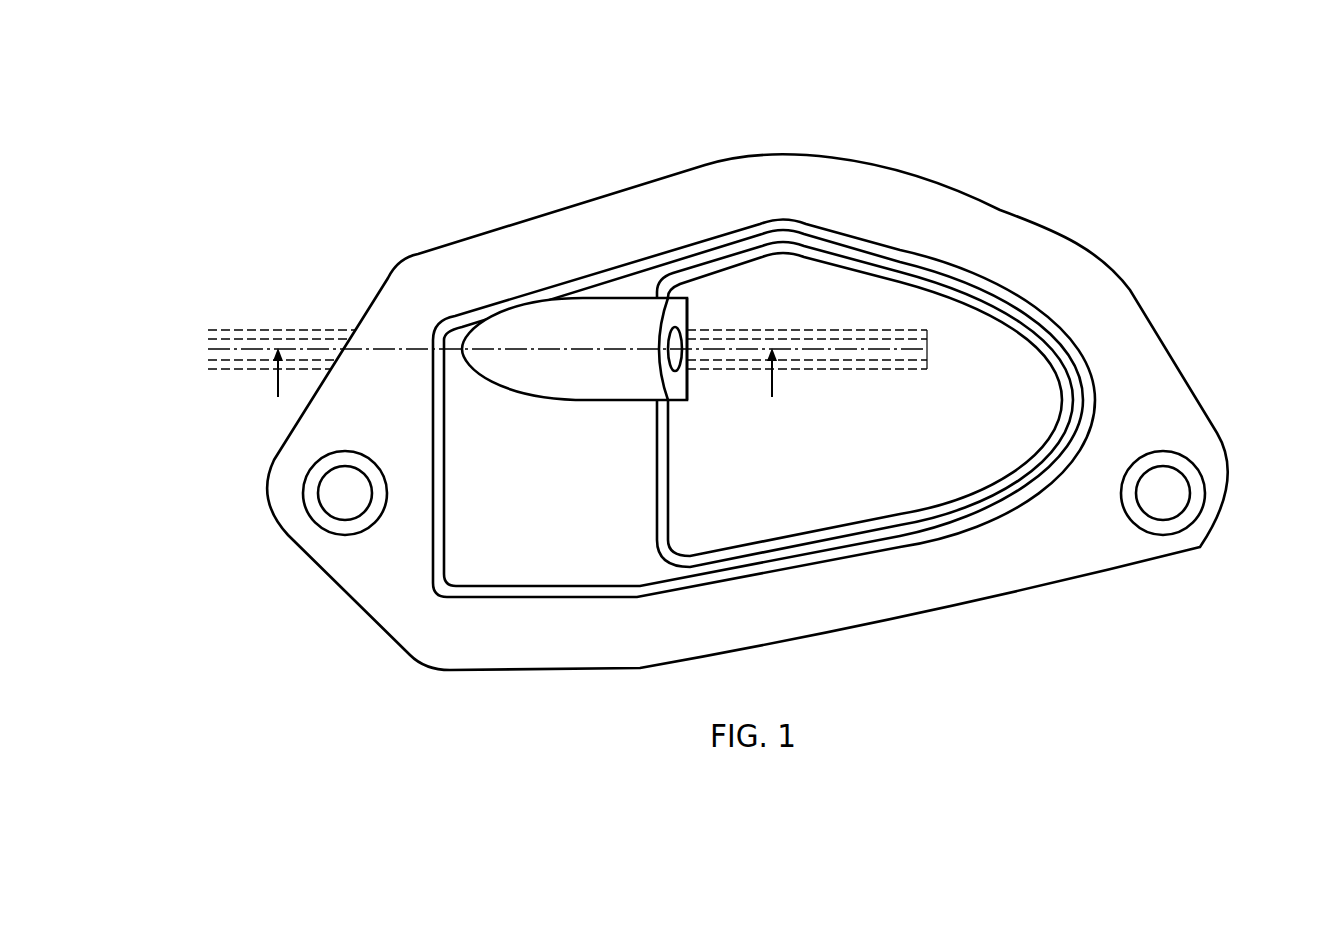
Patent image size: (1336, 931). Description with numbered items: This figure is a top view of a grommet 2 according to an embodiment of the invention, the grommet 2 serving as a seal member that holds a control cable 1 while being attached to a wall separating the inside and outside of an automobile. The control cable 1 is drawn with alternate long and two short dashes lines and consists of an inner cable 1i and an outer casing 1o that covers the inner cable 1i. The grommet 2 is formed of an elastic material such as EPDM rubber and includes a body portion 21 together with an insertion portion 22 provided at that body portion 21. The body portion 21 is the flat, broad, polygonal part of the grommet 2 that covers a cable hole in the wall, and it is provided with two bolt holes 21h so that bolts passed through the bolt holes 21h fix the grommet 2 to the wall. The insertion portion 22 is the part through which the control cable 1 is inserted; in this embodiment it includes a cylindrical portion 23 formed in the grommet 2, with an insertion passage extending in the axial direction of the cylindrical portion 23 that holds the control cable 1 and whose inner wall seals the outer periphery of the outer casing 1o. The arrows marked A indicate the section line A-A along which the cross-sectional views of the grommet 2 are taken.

The control cable 1 is at (265, 290).
The inner cable 1i is at (232, 330).
The outer casing 1o is at (310, 327).
The grommet 2 is at (1080, 132).
The body portion 21 is at (945, 170).
The bolt holes 21h is at (333, 507).
The insertion portion 22 is at (512, 404).
The cylindrical portion 23 is at (597, 398).
The line A- A is at (525, 389).